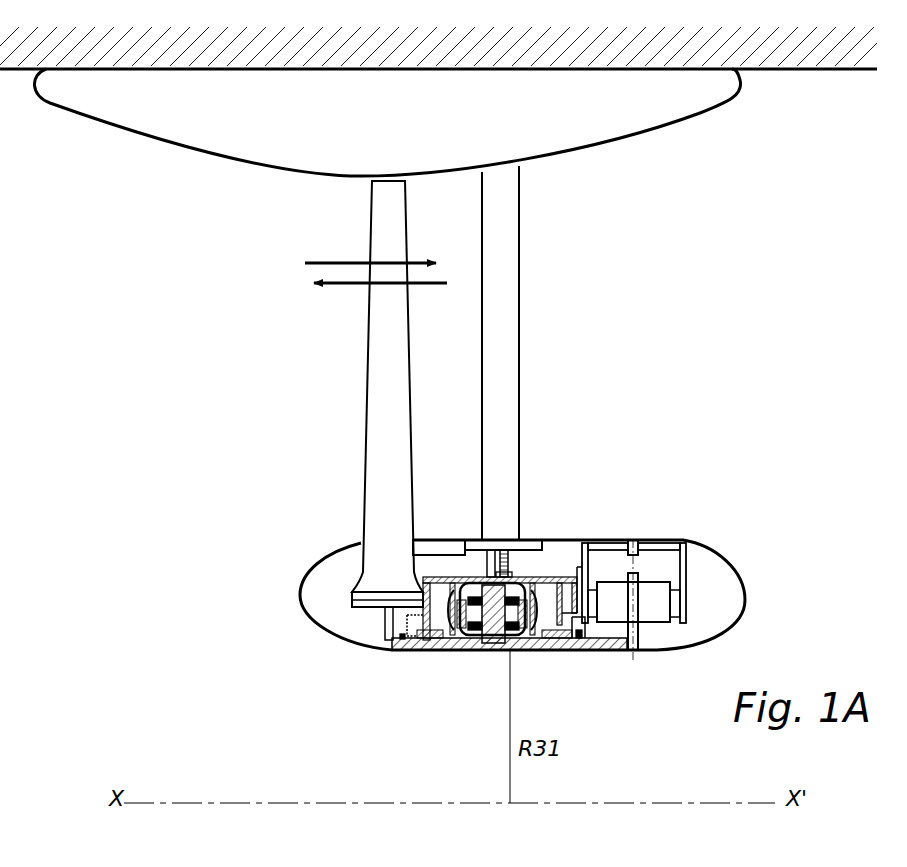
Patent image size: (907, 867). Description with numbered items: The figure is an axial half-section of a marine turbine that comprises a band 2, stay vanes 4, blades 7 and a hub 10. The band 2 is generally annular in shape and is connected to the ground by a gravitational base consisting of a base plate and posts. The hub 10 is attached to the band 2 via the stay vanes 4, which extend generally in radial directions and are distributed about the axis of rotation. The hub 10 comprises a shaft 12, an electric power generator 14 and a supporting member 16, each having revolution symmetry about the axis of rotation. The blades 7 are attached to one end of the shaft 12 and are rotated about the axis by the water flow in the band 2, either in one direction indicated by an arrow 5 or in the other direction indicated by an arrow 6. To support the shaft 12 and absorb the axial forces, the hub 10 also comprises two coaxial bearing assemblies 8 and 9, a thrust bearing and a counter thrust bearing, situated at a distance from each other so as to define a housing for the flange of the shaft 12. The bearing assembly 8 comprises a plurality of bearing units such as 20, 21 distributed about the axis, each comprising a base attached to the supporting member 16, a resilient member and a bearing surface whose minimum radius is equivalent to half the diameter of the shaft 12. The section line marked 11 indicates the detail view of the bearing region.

The band 2 is at (640, 113).
The stay vanes 4 is at (495, 312).
The arrow 5 is at (363, 260).
The arrow 6 is at (390, 281).
The blades 7 is at (373, 384).
The bearing assembly 8 is at (483, 750).
The bearing assembly 9 is at (420, 750).
The hub 10 is at (296, 560).
The section line 11 is at (527, 652).
The shaft 12 is at (570, 650).
The electric power generator 14 is at (683, 537).
The supporting member 16 is at (552, 577).
The bearing unit 20 is at (503, 650).
The bearing unit 21 is at (458, 648).